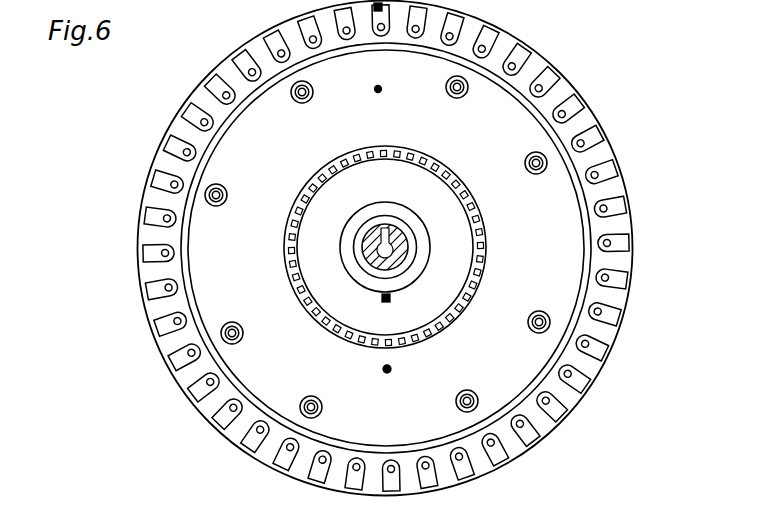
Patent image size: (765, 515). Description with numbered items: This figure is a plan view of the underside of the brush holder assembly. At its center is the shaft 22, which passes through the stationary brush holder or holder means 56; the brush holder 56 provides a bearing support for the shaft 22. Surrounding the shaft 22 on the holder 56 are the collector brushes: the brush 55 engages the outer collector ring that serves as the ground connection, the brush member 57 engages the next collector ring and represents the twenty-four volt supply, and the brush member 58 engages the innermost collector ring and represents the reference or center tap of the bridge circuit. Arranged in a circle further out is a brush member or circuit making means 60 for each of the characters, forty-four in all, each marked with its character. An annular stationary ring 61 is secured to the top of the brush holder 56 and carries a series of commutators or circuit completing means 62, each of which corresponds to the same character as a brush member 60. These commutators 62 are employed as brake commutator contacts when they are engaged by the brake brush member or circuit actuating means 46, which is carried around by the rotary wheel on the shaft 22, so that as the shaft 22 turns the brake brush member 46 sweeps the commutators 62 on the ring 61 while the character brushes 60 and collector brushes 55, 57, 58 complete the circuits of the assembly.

The shaft 22 is at (397, 240).
The brake brush member 46 is at (378, 8).
The brush 55 is at (375, 90).
The brush holder 56 is at (518, 127).
The brush member 57 is at (383, 369).
The brush member 58 is at (388, 303).
The brush member 60 is at (491, 236).
The annular stationary ring 61 is at (625, 258).
The commutator 62 is at (606, 327).